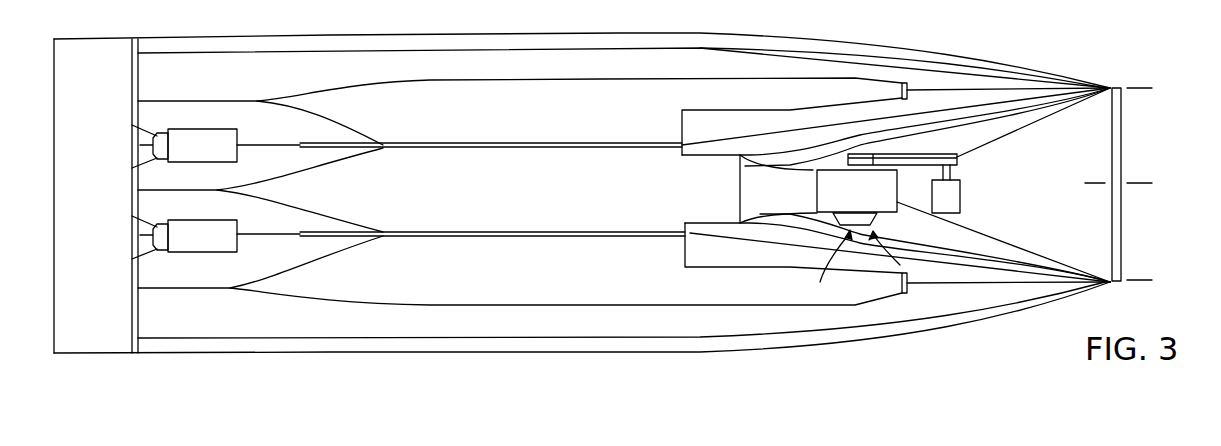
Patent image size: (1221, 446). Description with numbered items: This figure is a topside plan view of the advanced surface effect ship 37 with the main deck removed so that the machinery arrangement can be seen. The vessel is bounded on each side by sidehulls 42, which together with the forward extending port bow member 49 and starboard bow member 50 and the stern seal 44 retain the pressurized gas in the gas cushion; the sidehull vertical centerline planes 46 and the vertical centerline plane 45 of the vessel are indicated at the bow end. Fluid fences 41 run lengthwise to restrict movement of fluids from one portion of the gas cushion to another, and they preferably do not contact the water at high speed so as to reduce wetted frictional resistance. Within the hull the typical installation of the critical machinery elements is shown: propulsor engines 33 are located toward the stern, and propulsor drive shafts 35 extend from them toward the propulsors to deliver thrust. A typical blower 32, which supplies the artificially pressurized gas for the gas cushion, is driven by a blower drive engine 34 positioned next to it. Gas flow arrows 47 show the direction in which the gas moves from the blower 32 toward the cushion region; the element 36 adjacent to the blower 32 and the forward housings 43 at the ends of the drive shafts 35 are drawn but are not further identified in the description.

The blower 32 is at (868, 204).
The propulsor engines 33 is at (215, 158).
The blower drive engine 34 is at (958, 197).
The propulsor drive shafts 35 is at (150, 142).
The nozzle 36 is at (878, 218).
The advanced surface effect ship 37 is at (1074, 162).
The fluid fences 41 is at (517, 143).
The sidehulls 42 is at (642, 343).
The forward pod 43 is at (693, 119).
The stern seal 44 is at (288, 137).
The vertical centerline plane 45 is at (1130, 181).
The sidehull vertical centerline planes 46 is at (1137, 87).
The gas flow arrows 47 is at (823, 268).
The port bow member 49 is at (946, 85).
The starboard bow member 50 is at (954, 277).